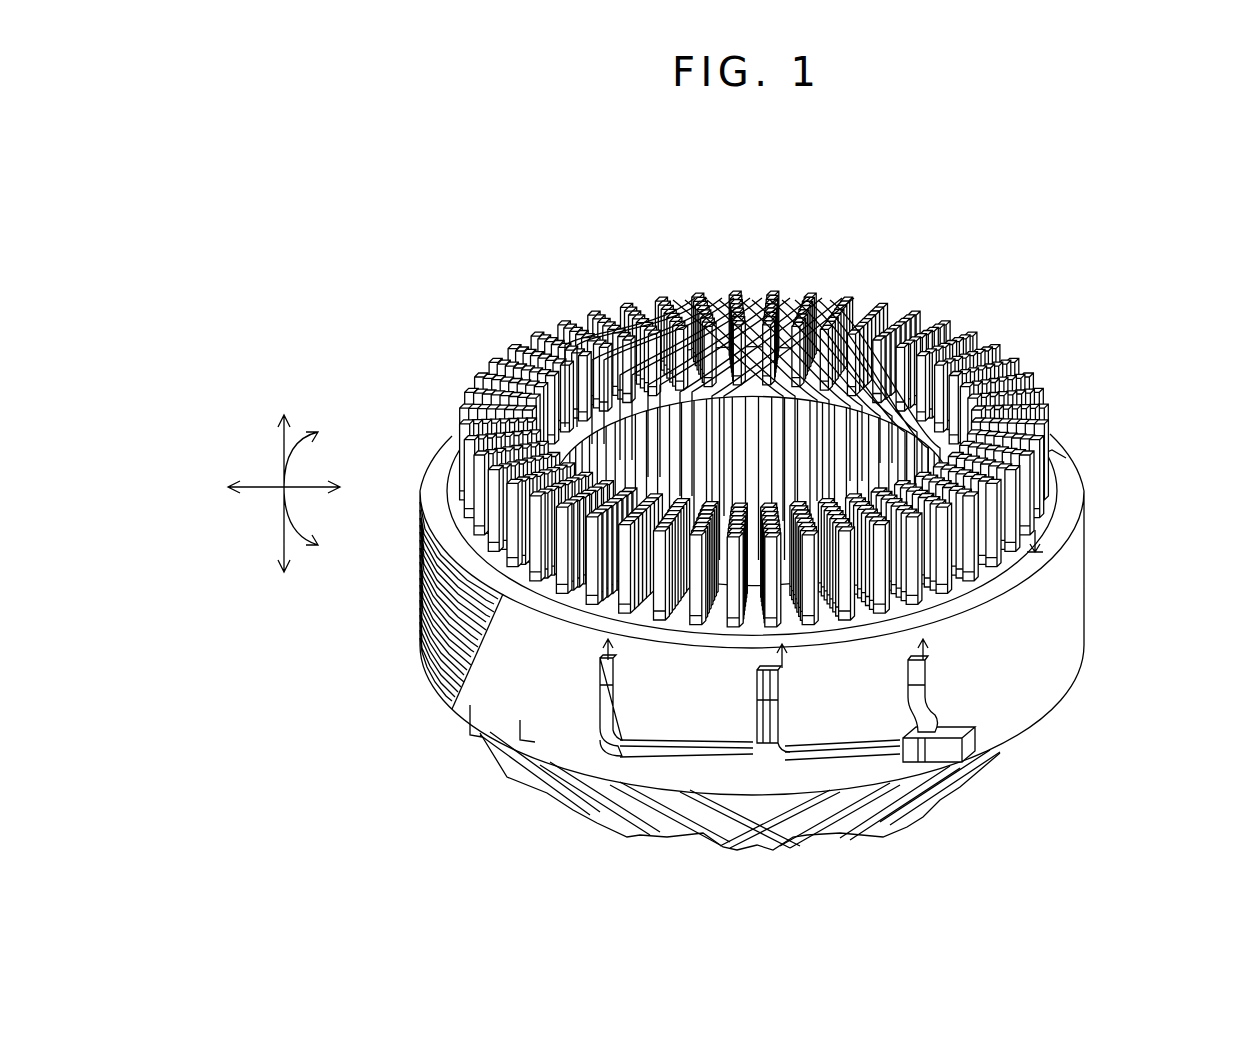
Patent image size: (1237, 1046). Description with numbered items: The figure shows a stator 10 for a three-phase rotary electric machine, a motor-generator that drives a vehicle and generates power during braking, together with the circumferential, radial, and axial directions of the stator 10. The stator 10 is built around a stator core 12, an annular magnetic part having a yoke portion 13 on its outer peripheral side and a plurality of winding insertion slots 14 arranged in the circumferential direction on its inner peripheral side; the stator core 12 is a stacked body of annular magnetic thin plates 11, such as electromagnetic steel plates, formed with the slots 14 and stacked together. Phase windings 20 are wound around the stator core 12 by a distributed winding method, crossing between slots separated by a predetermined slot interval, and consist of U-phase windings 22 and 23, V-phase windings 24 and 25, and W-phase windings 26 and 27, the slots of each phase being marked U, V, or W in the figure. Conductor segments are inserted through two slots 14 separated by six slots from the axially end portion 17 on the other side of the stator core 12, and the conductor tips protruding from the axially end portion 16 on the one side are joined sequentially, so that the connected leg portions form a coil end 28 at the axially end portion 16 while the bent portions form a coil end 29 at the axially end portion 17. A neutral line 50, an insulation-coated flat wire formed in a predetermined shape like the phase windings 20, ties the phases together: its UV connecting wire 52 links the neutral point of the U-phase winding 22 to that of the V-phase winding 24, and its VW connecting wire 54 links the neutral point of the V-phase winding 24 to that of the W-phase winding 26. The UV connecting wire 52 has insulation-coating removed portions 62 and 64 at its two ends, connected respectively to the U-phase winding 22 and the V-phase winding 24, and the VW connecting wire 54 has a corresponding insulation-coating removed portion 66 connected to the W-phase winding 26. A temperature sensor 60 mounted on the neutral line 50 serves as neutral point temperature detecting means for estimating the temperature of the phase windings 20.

The stator 10 is at (482, 318).
The magnetic thin plates 11 is at (420, 606).
The stator core 12 is at (1058, 625).
The yoke portion 13 is at (1057, 512).
The winding insertion slots 14 is at (644, 633).
The axially end portion on one side 16 is at (1035, 528).
The axially end portion on the other side 17 is at (1074, 706).
The phase windings 20 is at (767, 185).
The U-phase winding 22 is at (838, 272).
The U-phase winding 23 is at (802, 268).
The V-phase winding 24 is at (986, 314).
The V-phase winding 25 is at (952, 305).
The W-phase winding 26 is at (1041, 382).
The W-phase winding 27 is at (1038, 366).
The coil end 28 is at (1058, 467).
The coil end 29 is at (1043, 748).
The neutral line 50 is at (568, 712).
The UV connecting wire 52 is at (852, 747).
The VW connecting wire 54 is at (668, 750).
The temperature sensor 60 is at (962, 737).
The insulation-coating removed portion 62 is at (923, 673).
The insulation-coating removed portion 64 is at (778, 690).
The insulation-coating removed portion 66 is at (600, 672).